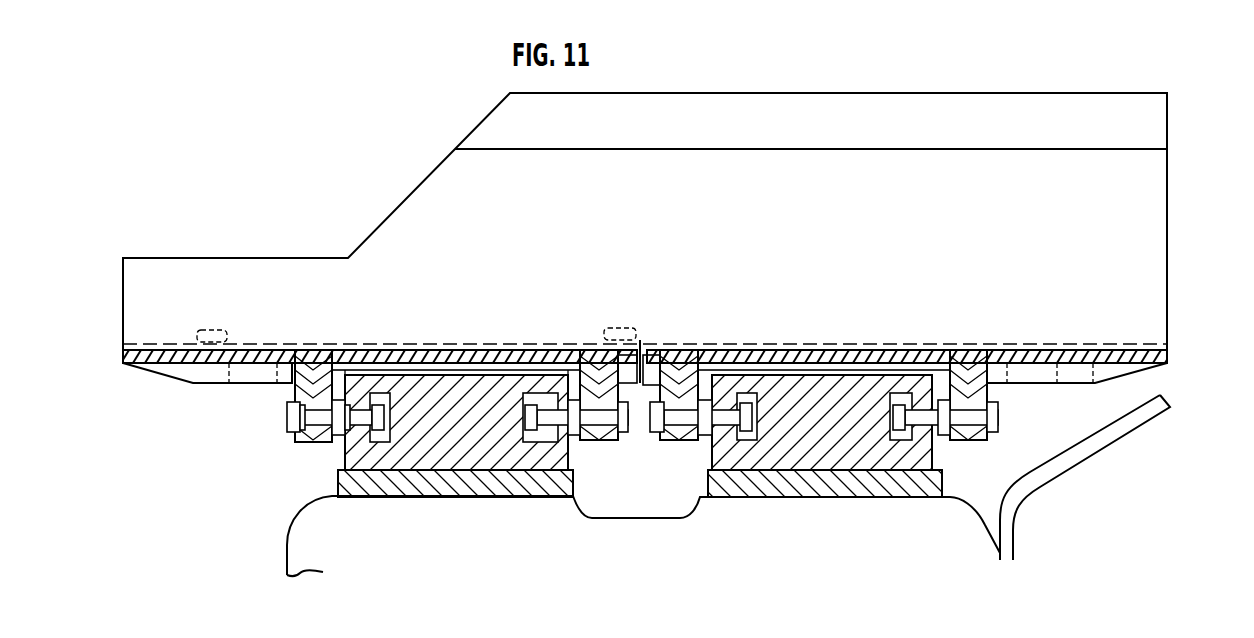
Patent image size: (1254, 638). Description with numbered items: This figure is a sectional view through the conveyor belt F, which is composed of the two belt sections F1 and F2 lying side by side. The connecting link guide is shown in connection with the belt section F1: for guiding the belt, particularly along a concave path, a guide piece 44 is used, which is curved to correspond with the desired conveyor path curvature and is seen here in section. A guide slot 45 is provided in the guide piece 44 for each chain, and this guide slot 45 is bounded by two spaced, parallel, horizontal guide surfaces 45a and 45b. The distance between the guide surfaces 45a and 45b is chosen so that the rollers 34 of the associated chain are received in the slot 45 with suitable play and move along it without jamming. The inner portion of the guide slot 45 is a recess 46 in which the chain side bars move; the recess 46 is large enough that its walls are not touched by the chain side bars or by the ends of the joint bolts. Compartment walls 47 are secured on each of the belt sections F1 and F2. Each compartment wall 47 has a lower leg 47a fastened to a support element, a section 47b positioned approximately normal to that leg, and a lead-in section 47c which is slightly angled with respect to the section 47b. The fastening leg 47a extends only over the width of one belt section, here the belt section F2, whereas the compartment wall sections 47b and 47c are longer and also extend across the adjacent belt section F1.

The compartment wall 47 is at (675, 204).
The lower leg 47a is at (272, 345).
The section 47b is at (1145, 240).
The lead-in section 47c is at (980, 112).
The recess 46 is at (751, 393).
The guide slot 45 is at (728, 432).
The guide surface 45a is at (712, 440).
The guide surface 45b is at (715, 432).
The roller 34 is at (740, 430).
The guide piece 44 is at (848, 445).
The conveyor belt F is at (628, 492).
The belt section F1 is at (1163, 371).
The belt section F2 is at (145, 391).